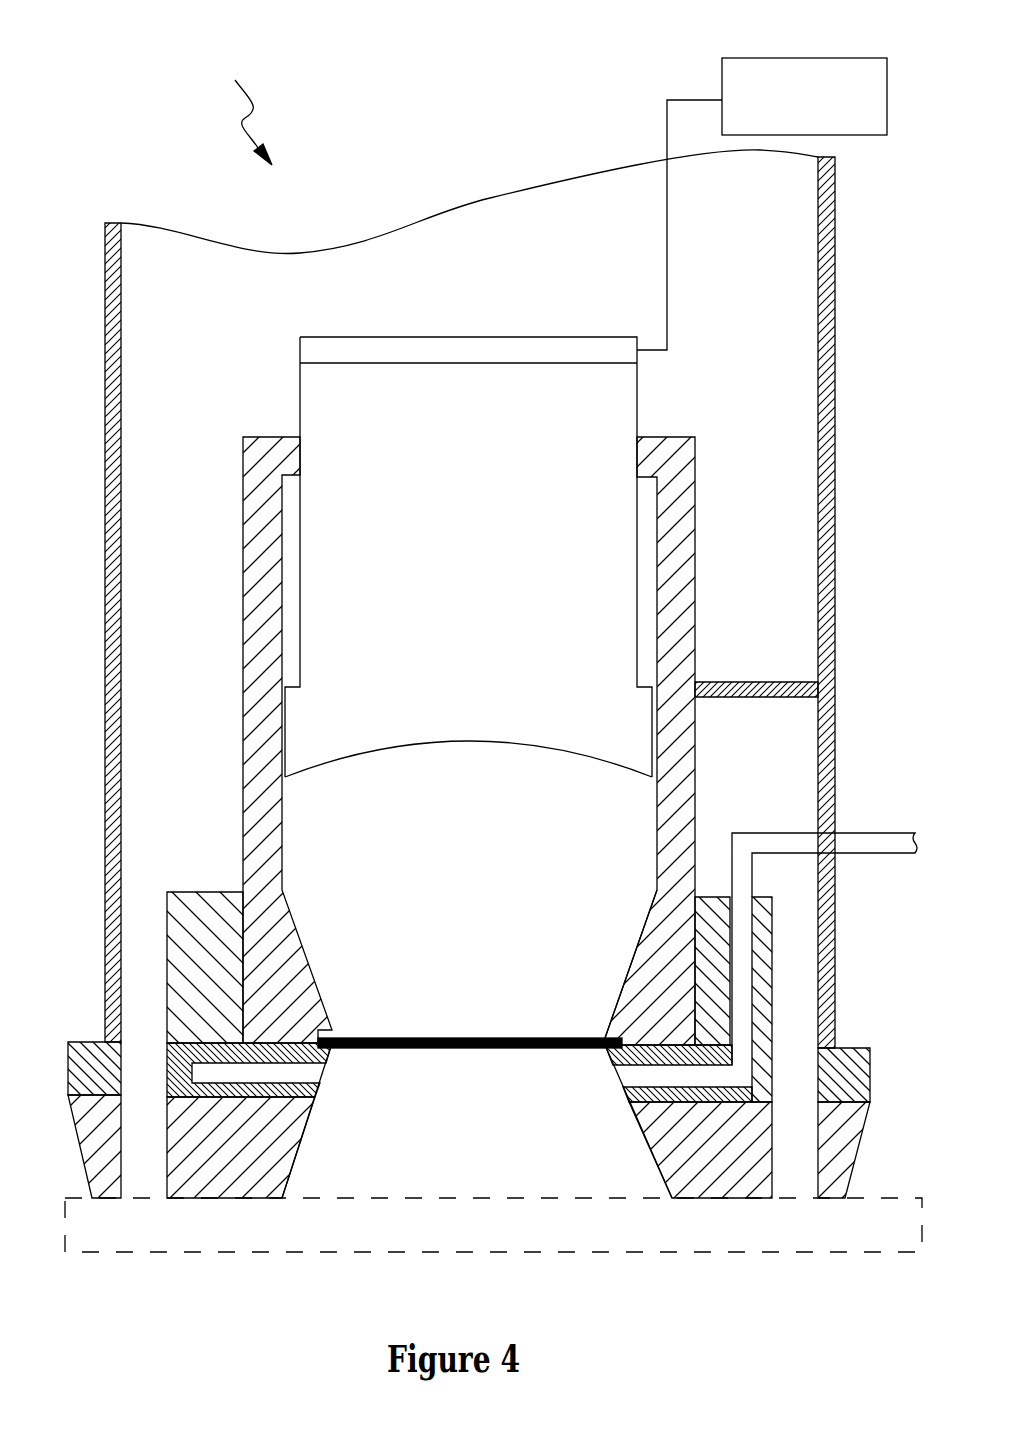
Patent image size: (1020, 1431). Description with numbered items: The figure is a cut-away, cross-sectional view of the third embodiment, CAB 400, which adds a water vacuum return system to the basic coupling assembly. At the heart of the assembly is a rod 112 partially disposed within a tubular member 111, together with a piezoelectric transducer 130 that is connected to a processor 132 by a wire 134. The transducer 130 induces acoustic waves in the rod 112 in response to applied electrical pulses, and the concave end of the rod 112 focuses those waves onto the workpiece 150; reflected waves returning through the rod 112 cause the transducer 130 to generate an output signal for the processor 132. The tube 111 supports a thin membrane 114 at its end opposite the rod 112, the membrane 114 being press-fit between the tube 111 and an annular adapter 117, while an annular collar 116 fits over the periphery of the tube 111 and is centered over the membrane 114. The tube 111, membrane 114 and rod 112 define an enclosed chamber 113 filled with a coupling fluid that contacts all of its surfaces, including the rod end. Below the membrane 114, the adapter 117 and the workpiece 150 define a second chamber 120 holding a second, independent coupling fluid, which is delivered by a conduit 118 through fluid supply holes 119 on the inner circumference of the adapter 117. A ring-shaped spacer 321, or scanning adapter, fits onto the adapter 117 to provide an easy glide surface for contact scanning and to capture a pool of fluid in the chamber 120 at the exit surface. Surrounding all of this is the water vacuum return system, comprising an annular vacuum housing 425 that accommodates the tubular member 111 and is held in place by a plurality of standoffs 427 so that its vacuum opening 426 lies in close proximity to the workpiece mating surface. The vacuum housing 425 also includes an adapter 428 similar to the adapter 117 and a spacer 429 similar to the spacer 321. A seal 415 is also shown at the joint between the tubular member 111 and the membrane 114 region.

The CAB 400 is at (240, 110).
The processor 132 is at (800, 58).
The wire 134 is at (667, 303).
The vacuum housing 425 is at (105, 780).
The piezoelectric transducer 130 is at (470, 350).
The chamber 113 is at (482, 863).
The rod 112 is at (313, 632).
The tubular member 111 is at (696, 588).
The standoffs 427 is at (790, 682).
The collar 116 is at (190, 940).
The adapter 117 is at (180, 1053).
The vacuum opening 426 is at (148, 1182).
The spacer 321 is at (672, 1190).
The adapter 428 is at (870, 1087).
The spacer 429 is at (847, 1168).
The conduit 118 is at (780, 833).
The fluid supply holes 119 is at (332, 1075).
The seal 415 is at (620, 1037).
The membrane 114 is at (465, 1038).
The second chamber 120 is at (487, 1098).
The workpiece 150 is at (718, 1255).